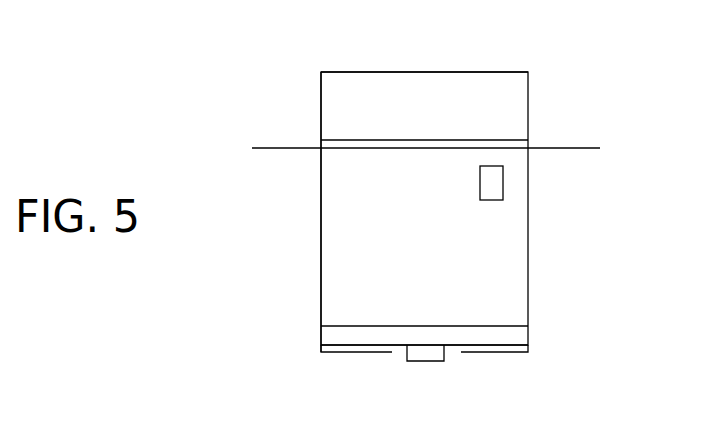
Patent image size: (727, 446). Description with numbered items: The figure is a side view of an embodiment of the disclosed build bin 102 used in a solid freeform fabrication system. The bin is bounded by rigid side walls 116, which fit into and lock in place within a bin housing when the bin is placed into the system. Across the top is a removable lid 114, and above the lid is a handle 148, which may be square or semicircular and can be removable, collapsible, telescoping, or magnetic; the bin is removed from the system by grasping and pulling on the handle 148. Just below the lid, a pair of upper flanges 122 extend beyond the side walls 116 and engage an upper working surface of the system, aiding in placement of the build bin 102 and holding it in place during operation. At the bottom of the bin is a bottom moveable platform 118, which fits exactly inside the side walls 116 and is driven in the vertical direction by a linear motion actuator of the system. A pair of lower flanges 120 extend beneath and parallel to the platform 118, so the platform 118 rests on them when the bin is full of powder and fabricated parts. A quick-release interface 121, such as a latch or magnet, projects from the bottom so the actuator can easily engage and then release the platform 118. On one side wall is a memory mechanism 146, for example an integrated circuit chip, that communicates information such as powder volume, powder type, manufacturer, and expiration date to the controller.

The build bin 102 is at (565, 233).
The removable lid 114 is at (501, 144).
The side walls 116 is at (321, 238).
The bottom moveable platform 118 is at (510, 334).
The lower flanges 120 is at (342, 352).
The quick-release interface 121 is at (427, 361).
The upper flanges 122 is at (568, 148).
The memory mechanism 146 is at (492, 182).
The handle 148 is at (426, 72).